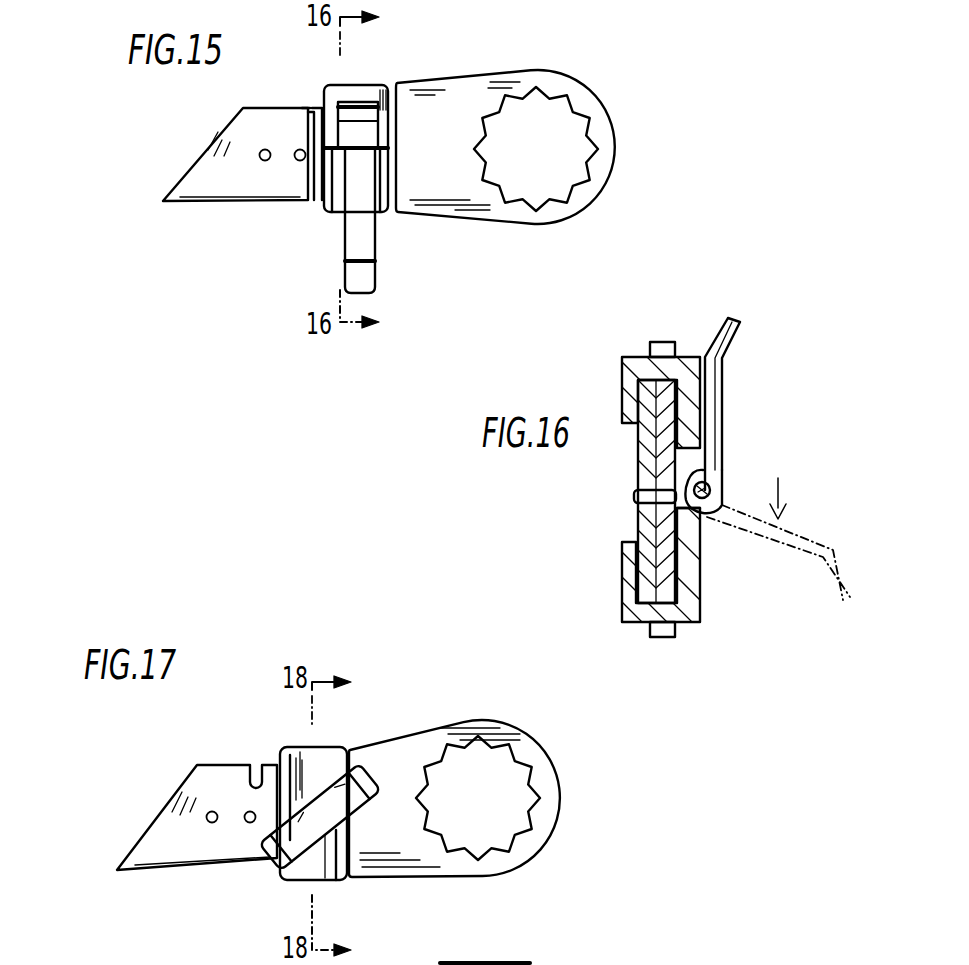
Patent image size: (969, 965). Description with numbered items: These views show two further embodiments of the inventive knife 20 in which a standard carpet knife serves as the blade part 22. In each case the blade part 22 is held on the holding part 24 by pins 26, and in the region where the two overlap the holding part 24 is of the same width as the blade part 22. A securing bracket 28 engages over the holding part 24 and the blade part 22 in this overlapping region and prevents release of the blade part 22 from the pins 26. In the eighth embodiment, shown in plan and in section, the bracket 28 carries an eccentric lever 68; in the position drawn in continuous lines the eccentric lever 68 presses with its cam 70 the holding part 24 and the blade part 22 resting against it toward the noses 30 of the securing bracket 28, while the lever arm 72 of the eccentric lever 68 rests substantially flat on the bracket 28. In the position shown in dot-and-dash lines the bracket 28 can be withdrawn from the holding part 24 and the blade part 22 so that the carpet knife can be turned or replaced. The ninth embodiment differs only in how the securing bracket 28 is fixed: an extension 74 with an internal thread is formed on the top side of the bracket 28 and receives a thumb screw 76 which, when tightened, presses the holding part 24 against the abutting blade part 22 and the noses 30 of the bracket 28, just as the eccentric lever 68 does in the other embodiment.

In FIG. 15, the knife 20 is at (446, 46).
In FIG. 16, the knife 20 is at (708, 304).
In FIG. 17, the knife 20 is at (613, 807).
In FIG. 15, the blade part 22 is at (191, 206).
In FIG. 16, the blade part 22 is at (637, 526).
In FIG. 17, the blade part 22 is at (160, 836).
In FIG. 15, the holding part 24 is at (613, 105).
In FIG. 16, the holding part 24 is at (668, 598).
In FIG. 17, the holding part 24 is at (517, 731).
In FIG. 16, the pins 26 is at (636, 498).
In FIG. 15, the securing bracket 28 is at (310, 228).
In FIG. 16, the securing bracket 28 is at (627, 624).
In FIG. 17, the securing bracket 28 is at (347, 879).
In FIG. 16, the noses 30 is at (624, 418).
In FIG. 15, the eccentric lever 68 is at (375, 183).
In FIG. 16, the eccentric lever 68 is at (714, 448).
In FIG. 16, the cam 70 is at (706, 505).
In FIG. 15, the lever arm 72 is at (378, 280).
In FIG. 16, the lever arm 72 is at (741, 320).
In FIG. 17, the extension 74 is at (303, 750).
In FIG. 17, the thumb screw 76 is at (281, 868).